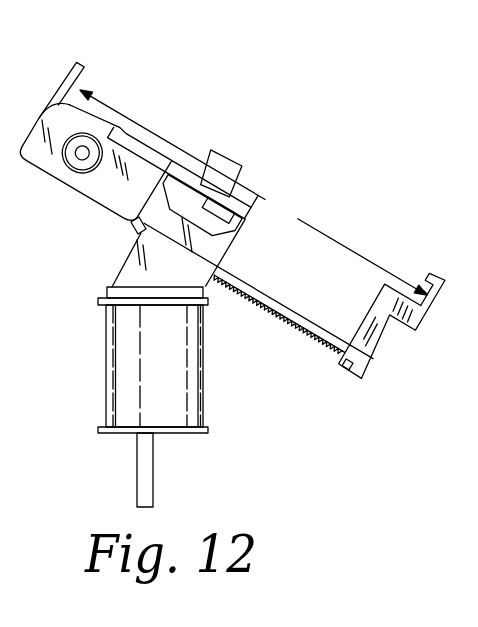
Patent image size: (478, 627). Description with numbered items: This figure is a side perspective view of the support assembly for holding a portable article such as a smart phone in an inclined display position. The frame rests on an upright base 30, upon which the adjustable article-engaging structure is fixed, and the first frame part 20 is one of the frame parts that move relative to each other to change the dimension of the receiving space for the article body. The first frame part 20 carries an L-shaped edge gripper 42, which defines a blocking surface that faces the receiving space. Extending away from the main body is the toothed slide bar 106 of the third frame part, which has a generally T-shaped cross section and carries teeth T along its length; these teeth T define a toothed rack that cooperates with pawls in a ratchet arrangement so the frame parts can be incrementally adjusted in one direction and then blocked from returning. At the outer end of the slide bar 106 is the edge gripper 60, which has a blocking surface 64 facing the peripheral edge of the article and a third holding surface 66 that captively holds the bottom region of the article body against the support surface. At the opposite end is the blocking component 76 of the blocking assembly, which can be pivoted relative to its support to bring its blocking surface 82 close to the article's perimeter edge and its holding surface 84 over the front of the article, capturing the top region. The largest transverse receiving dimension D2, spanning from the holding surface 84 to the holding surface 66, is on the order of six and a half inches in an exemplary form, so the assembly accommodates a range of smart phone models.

The first frame part 20 is at (233, 150).
The upright base 30 is at (133, 362).
The edge gripper 42 is at (74, 176).
The edge gripper 60 is at (444, 300).
The blocking surface 64 is at (424, 289).
The third holding surface 66 is at (426, 276).
The blocking component 76 is at (66, 92).
The blocking surface 82 is at (105, 106).
The holding surface 84 is at (90, 93).
The toothed slide bar 106 is at (282, 297).
The largest transverse receiving dimension D2 is at (253, 192).
The teeth T is at (288, 318).